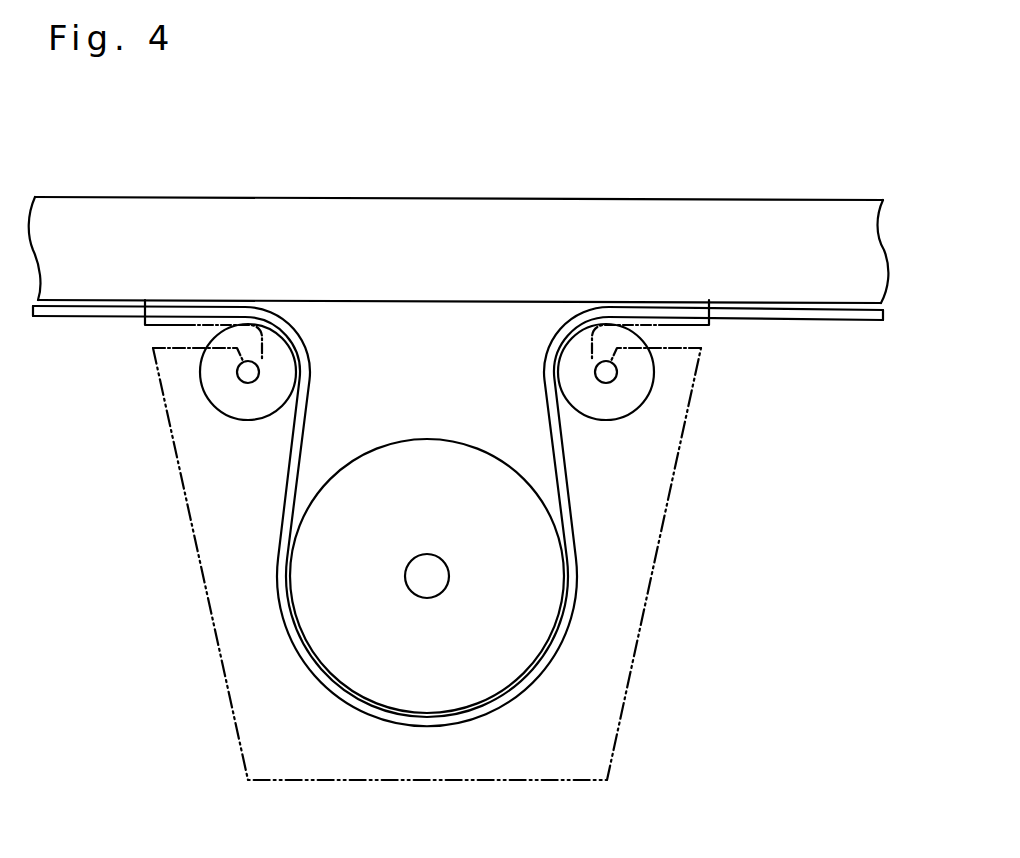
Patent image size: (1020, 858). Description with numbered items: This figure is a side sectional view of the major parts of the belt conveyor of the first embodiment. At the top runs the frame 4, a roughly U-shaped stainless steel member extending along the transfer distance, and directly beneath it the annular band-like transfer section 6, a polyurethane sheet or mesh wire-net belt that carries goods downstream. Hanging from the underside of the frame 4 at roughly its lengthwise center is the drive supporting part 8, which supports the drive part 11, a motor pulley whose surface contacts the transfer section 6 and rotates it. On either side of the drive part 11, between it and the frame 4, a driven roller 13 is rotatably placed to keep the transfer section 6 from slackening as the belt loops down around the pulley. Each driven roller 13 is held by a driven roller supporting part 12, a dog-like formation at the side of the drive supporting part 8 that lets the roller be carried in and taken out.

The frame 4 is at (718, 231).
The transfer section 6 is at (779, 320).
The drive supporting part 8 is at (218, 655).
The drive part 11 is at (510, 600).
The driven roller supporting part 12 is at (160, 328).
The driven roller 13 is at (228, 387).